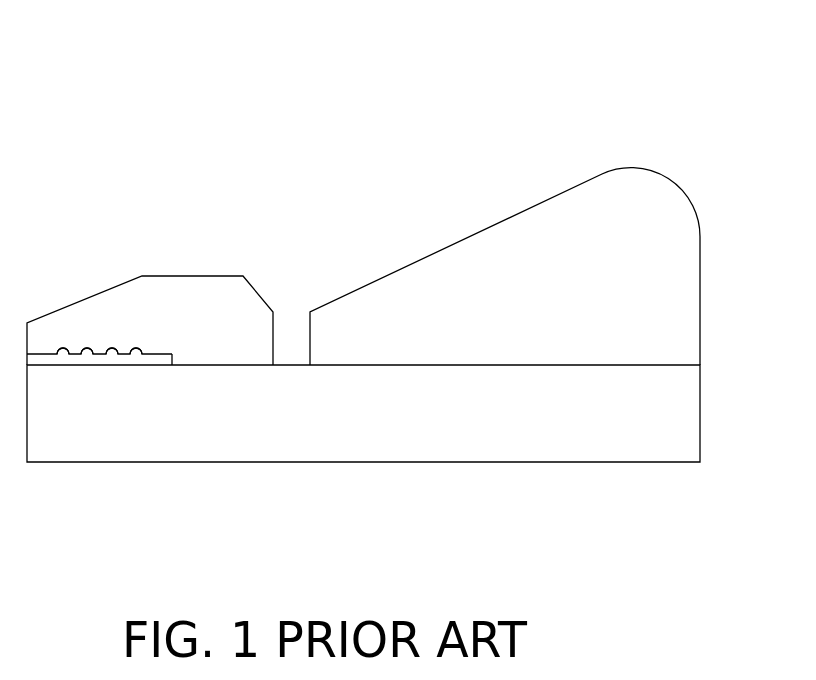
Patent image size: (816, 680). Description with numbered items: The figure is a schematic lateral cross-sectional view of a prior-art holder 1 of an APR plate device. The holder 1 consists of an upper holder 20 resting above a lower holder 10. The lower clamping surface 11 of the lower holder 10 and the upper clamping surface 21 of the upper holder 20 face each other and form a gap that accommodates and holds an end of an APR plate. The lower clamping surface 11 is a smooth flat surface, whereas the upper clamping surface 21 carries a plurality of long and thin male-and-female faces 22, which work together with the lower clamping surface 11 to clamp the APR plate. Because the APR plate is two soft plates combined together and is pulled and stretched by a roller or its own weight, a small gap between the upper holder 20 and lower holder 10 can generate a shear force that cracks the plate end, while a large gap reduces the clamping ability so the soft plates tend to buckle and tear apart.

The holder 1 is at (507, 102).
The lower holder 10 is at (317, 452).
The lower clamping surface 11 is at (148, 366).
The upper holder 20 is at (188, 284).
The upper clamping surface 21 is at (158, 354).
The male-and-female faces 22 is at (80, 343).